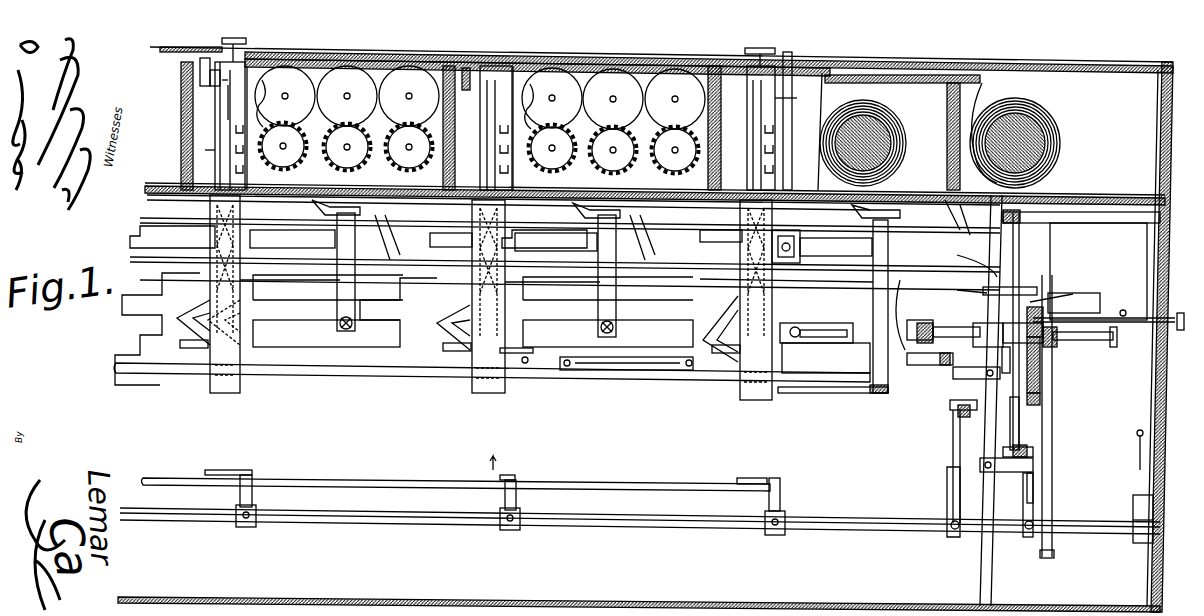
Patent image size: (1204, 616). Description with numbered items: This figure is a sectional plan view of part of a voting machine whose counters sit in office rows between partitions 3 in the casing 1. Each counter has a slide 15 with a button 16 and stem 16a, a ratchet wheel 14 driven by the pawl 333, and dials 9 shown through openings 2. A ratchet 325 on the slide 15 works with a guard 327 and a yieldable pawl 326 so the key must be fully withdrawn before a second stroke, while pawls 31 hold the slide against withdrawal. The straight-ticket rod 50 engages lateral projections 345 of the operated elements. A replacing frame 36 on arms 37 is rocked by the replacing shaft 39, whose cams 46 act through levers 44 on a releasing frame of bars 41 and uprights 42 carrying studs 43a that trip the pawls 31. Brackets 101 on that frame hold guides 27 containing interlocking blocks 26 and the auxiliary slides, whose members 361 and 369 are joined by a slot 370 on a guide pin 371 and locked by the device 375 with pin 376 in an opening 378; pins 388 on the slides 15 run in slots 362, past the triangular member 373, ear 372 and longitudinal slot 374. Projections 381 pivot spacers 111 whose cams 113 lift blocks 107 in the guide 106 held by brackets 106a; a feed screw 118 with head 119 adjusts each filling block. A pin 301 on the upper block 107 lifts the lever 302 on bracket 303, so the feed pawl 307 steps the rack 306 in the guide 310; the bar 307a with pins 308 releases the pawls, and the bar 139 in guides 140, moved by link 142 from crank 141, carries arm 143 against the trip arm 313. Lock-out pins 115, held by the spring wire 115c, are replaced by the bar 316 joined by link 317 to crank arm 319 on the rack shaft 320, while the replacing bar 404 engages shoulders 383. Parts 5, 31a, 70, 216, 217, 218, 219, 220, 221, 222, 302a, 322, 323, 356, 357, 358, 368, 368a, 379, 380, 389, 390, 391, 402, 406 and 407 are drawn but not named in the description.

The casing 1 is at (1162, 100).
The openings 2 is at (350, 52).
The partitions 3 is at (181, 100).
The wheel 5 is at (708, 110).
The dials 9 is at (480, 97).
The ratchet wheel 14 is at (418, 148).
The slide 15 is at (506, 119).
The button 16 is at (225, 41).
The connecting stem 16a is at (215, 58).
The interlocking blocks 26 is at (358, 240).
The guide 27 is at (147, 217).
The pawls 31 is at (612, 192).
The gear 31a is at (918, 228).
The replacing frame 36 is at (628, 486).
The arms 37 is at (252, 471).
The replacing shaft 39 is at (818, 525).
The horizontal bars 41 is at (1055, 190).
The uprights 42 is at (312, 208).
The upper studs 43a is at (561, 247).
The levers 44 is at (1142, 436).
The cams 46 is at (1133, 515).
The straight-ticket rod 50 is at (210, 78).
The post 70 is at (858, 272).
The brackets 101 is at (337, 284).
The guide 106 is at (1042, 375).
The brackets 106a is at (1070, 222).
The secondary interlocking blocks 107 is at (1032, 292).
The spacers 111 is at (943, 327).
The cam 113 is at (975, 320).
The lock-out pins 115 is at (1120, 290).
The spring rod 115c is at (1127, 305).
The feed screw 118 is at (1105, 350).
The head 119 is at (1105, 340).
The replacing bar 139 is at (972, 413).
The fixed guides 140 is at (940, 422).
The crank 141 is at (947, 504).
The link 142 is at (938, 490).
The replacing arm 143 is at (975, 437).
The spring housing 216 is at (1092, 157).
The partition 217 is at (947, 125).
The plate 218 is at (914, 90).
The spring drum 219 is at (848, 143).
The spring drum 220 is at (1020, 128).
The bracket 221 is at (986, 88).
The plate 222 is at (899, 131).
The lug 301 is at (1060, 318).
The lever 302 is at (1045, 355).
The rod end 302a is at (1048, 560).
The bracket 303 is at (1035, 540).
The rack 306 is at (1042, 398).
The feed pawl 307 is at (1054, 430).
The releasing bar 307a is at (1053, 470).
The pins 308 is at (1035, 452).
The guide 310 is at (1078, 402).
The trip arm 313 is at (988, 438).
The replacing bar 316 is at (1060, 303).
The link 317 is at (1051, 293).
The crank arm 319 is at (995, 270).
The rack shaft 320 is at (983, 570).
The lever 322 is at (1000, 475).
The link 323 is at (1030, 500).
The ratchet 325 is at (222, 88).
The pawl 326 is at (215, 165).
The guard 327 is at (225, 115).
The ratchet operating pawl 333 is at (282, 138).
The lateral projections 345 is at (218, 148).
The gear 356 is at (613, 150).
The bar 357 is at (506, 280).
The link 358 is at (672, 230).
The slide member 361 is at (312, 421).
The slots 362 is at (426, 329).
The channel 368 is at (473, 298).
The channel 368a is at (465, 333).
The slide member 369 is at (292, 352).
The slot 370 is at (812, 323).
The headed guide pin 371 is at (826, 358).
The transverse ear 372 is at (247, 395).
The triangular member 373 is at (195, 335).
The longitudinal slot 374 is at (200, 380).
The locking device 375 is at (608, 372).
The terminal pin 376 is at (564, 385).
The opening 378 is at (532, 370).
The pin 379 is at (688, 372).
The block 380 is at (473, 333).
The projections 381 is at (912, 320).
The shoulders 383 is at (920, 280).
The pins 388 is at (832, 303).
The bar 389 is at (833, 385).
The link 390 is at (845, 410).
The link 391 is at (900, 408).
The link 402 is at (810, 393).
The replacing bar 404 is at (908, 362).
The bar 406 is at (950, 375).
The link 407 is at (914, 374).